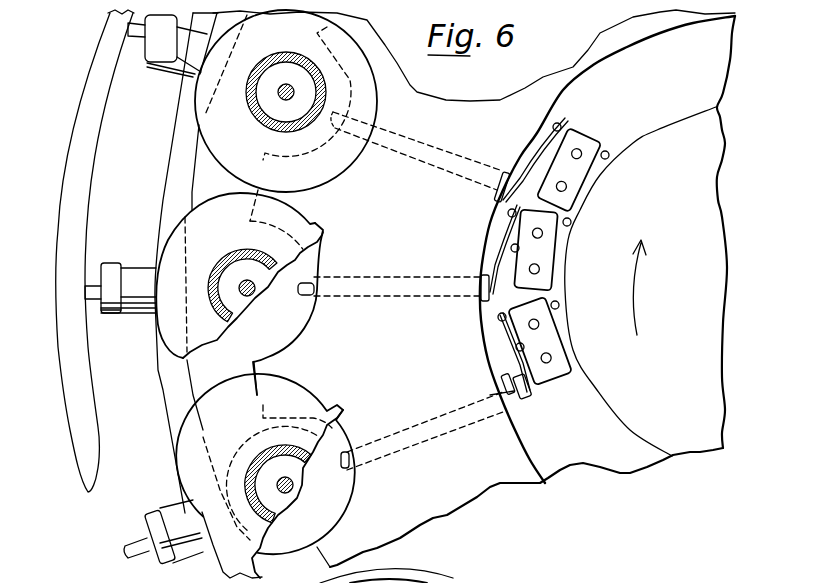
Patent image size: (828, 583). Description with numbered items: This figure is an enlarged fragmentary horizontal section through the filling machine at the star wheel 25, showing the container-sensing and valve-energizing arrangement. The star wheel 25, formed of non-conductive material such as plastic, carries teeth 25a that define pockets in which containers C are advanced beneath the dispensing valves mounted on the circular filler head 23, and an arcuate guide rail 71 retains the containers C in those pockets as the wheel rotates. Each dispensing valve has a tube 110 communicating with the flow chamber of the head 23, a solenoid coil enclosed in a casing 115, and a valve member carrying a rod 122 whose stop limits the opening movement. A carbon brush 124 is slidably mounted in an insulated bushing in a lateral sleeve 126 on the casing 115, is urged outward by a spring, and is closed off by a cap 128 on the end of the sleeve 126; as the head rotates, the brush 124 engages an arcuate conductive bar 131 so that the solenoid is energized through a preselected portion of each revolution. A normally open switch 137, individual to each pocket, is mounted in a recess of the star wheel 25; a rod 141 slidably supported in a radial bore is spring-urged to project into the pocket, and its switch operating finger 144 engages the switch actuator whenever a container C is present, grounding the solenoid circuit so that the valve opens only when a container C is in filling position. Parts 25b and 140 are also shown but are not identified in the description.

The filler head 23 is at (481, 582).
The star wheel 25 is at (485, 476).
The teeth 25a is at (257, 375).
The drum segment 25b is at (318, 318).
The arcuate guide rail 71 is at (196, 390).
The tube 110 is at (228, 261).
The casing 115 is at (178, 238).
The rod 122 is at (251, 280).
The brush 124 is at (92, 282).
The lateral sleeve 126 is at (142, 318).
The cap 128 is at (110, 318).
The arcuate bar 131 is at (82, 448).
The switch 137 is at (553, 358).
The clip 140 is at (538, 382).
The rod 141 is at (303, 283).
The switch operating finger 144 is at (512, 396).
The container C is at (325, 520).